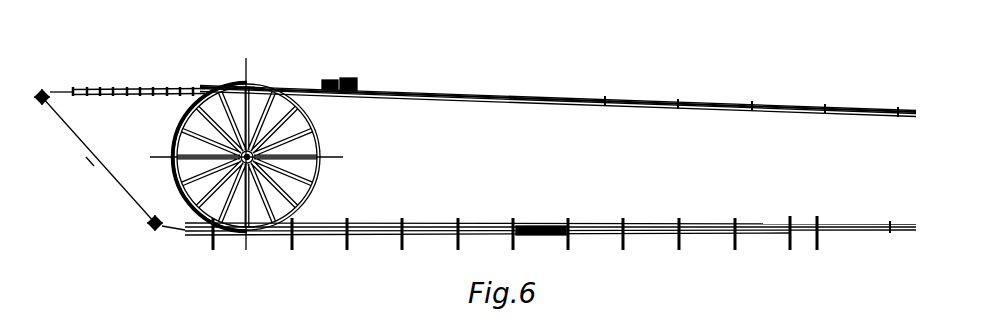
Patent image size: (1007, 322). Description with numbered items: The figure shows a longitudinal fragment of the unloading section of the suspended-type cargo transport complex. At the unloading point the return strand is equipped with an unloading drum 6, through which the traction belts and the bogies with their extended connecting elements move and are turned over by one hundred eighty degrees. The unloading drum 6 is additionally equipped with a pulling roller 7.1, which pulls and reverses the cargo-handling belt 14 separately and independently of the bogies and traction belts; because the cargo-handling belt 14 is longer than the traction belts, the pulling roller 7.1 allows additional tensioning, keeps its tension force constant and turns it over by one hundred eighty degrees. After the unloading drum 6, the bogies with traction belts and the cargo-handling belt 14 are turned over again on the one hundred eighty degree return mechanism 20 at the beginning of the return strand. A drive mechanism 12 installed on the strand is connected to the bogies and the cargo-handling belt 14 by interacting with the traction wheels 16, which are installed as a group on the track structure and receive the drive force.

The unloading drum 6 is at (252, 126).
The pulling roller 7.1 is at (119, 125).
The drive mechanism 12 is at (558, 70).
The cargo-handling belt 14 is at (192, 135).
The traction wheel 16 is at (400, 57).
The 180°-return mechanism 20 is at (539, 136).